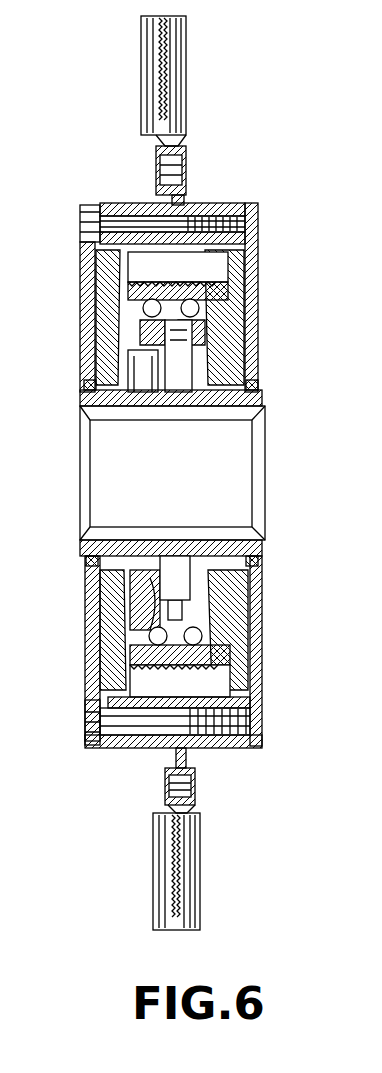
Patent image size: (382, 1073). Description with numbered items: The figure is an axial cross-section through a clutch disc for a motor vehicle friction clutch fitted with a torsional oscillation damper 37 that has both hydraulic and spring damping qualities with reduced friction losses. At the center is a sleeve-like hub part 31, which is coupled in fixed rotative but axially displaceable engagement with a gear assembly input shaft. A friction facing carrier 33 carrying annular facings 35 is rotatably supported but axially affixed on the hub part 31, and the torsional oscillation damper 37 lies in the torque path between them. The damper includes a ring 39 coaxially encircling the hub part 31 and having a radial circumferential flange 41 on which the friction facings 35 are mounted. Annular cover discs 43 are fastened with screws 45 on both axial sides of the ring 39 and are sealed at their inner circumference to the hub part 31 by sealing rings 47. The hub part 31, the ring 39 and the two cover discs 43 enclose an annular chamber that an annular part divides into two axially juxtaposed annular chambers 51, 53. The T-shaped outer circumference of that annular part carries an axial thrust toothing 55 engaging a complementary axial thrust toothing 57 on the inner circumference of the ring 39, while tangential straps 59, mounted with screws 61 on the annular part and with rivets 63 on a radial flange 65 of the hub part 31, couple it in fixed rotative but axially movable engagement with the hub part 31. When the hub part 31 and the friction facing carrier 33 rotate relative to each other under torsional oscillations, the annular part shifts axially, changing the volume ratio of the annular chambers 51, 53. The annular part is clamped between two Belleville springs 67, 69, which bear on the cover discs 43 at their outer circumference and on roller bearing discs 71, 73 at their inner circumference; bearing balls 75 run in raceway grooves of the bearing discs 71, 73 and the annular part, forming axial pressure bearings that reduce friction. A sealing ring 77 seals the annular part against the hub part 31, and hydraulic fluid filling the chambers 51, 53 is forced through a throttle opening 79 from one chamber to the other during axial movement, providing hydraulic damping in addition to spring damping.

The hub part 31 is at (248, 428).
The friction facing carrier 33 is at (208, 186).
The annular facings 35 is at (200, 856).
The torsional oscillation damper 37 is at (186, 312).
The ring 39 is at (215, 198).
The radial circumferential flange 41 is at (186, 152).
The annular cover discs 43 is at (95, 262).
The screws 45 is at (90, 222).
The sealing rings 47 is at (86, 391).
The annular chamber 51 is at (224, 366).
The annular chamber 53 is at (100, 362).
The axial thrust toothing 55 is at (200, 274).
The complementary axial thrust toothing 57 is at (250, 240).
The tangential straps 59 is at (242, 592).
The screws 61 is at (226, 640).
The rivets 63 is at (256, 566).
The radial flange 65 is at (178, 395).
The Belleville spring 67 is at (232, 662).
The Belleville spring 69 is at (112, 638).
The roller bearing disc 71 is at (215, 614).
The roller bearing disc 73 is at (122, 608).
The bearing balls 75 is at (102, 692).
The sealing ring 77 is at (137, 395).
The throttle opening 79 is at (230, 336).